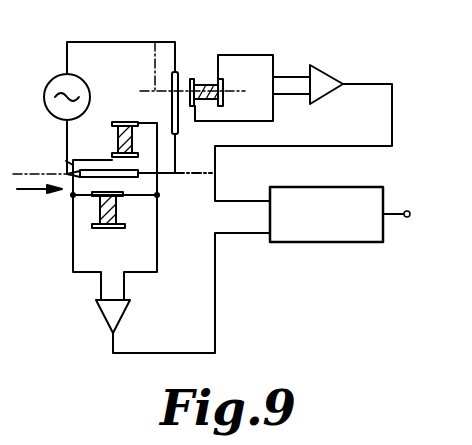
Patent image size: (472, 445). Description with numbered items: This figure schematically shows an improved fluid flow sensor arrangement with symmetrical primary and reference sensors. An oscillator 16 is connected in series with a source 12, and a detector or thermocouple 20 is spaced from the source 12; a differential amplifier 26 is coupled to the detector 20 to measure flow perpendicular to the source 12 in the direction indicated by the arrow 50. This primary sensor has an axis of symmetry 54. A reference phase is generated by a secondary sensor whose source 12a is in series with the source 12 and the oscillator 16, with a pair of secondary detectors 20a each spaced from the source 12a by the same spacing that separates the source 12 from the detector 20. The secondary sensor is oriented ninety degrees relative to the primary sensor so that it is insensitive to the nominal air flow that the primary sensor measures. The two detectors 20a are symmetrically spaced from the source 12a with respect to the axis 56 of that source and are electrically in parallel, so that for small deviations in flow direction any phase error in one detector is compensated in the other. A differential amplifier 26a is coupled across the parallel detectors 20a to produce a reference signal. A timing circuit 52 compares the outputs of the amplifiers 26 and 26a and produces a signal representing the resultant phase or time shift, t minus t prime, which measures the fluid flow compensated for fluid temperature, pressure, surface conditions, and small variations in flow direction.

The source 12 is at (179, 110).
The source 12a is at (141, 178).
The oscillator 16 is at (59, 76).
The detector or thermocouple 20 is at (205, 80).
The secondary detectors 20a is at (117, 147).
The differential amplifier 26 is at (318, 70).
The differential amplifier 26a is at (124, 310).
The arrow 50 is at (30, 194).
The timing circuit 52 is at (312, 244).
The axis of symmetry 54 is at (155, 48).
The axis 56 is at (49, 174).